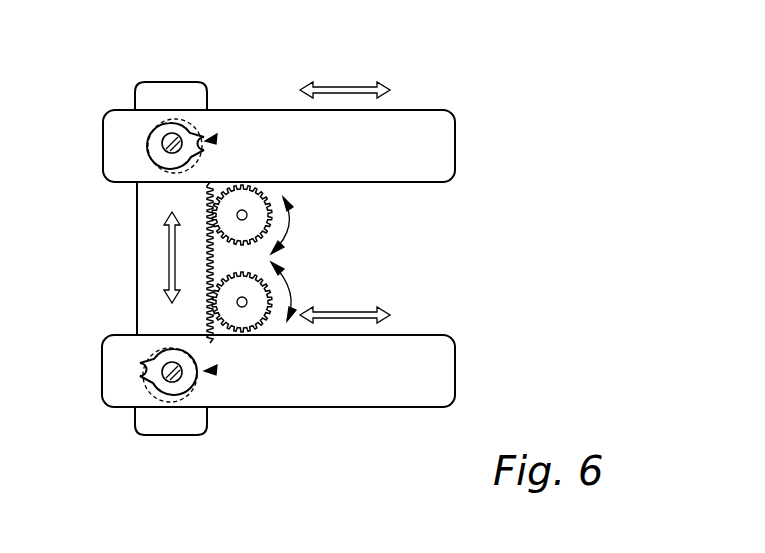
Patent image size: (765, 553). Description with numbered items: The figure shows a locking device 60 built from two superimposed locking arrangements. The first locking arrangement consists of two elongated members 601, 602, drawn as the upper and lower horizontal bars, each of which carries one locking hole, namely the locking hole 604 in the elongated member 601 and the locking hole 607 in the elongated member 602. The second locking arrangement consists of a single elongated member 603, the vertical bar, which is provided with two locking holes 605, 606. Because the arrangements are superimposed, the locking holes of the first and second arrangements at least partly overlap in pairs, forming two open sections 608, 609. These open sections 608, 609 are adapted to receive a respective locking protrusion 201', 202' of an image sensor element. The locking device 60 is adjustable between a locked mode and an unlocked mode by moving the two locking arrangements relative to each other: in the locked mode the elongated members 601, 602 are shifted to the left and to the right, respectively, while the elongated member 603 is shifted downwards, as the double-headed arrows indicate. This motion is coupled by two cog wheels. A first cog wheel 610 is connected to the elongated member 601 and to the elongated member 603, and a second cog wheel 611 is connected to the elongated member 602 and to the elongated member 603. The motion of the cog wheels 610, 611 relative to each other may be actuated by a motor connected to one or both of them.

The locking device 60 is at (544, 162).
The elongated member 601 is at (432, 130).
The elongated member 602 is at (433, 351).
The elongated member 603 is at (146, 247).
The locking hole 604 is at (155, 125).
The locking hole 605 is at (160, 174).
The locking hole 606 is at (150, 350).
The locking hole 607 is at (142, 384).
The open section 608 is at (211, 140).
The open section 609 is at (212, 372).
The first cog wheel 610 is at (258, 223).
The second cog wheel 611 is at (258, 302).
The locking protrusion 201' is at (188, 83).
The locking protrusion 202' is at (199, 427).